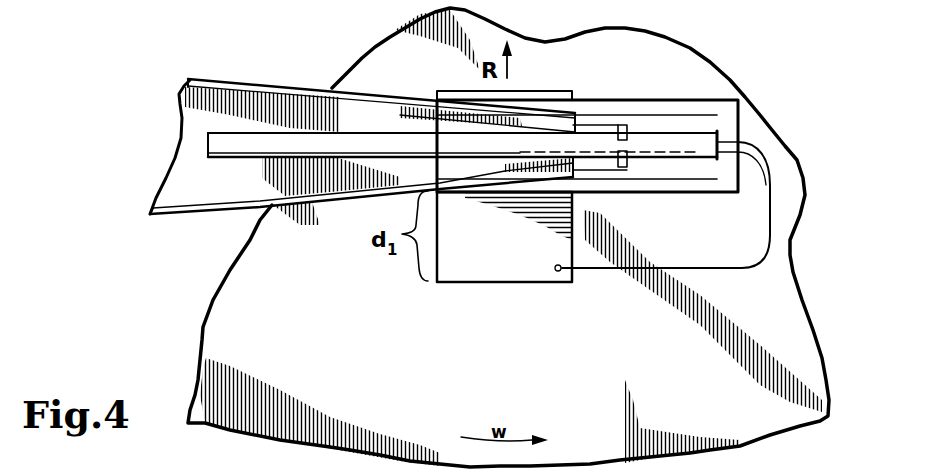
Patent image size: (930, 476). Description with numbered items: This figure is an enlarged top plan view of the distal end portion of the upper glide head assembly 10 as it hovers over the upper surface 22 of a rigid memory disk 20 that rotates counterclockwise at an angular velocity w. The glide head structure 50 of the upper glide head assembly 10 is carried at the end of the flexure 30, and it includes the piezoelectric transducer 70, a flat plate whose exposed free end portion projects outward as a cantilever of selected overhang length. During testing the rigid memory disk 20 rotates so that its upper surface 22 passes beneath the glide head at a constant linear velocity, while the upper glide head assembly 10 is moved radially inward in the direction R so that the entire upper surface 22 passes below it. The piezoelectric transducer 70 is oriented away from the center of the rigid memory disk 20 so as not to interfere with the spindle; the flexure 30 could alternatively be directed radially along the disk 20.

The upper glide head assembly 10 is at (250, 70).
The rigid memory disk 20 is at (243, 362).
The upper surface 22 is at (313, 352).
The flexure 30 is at (203, 208).
The glide head structure 50 is at (622, 88).
The piezoelectric transducer 70 is at (514, 270).